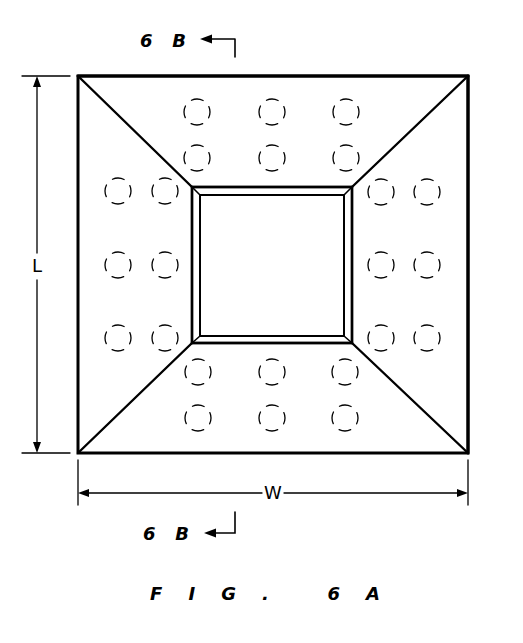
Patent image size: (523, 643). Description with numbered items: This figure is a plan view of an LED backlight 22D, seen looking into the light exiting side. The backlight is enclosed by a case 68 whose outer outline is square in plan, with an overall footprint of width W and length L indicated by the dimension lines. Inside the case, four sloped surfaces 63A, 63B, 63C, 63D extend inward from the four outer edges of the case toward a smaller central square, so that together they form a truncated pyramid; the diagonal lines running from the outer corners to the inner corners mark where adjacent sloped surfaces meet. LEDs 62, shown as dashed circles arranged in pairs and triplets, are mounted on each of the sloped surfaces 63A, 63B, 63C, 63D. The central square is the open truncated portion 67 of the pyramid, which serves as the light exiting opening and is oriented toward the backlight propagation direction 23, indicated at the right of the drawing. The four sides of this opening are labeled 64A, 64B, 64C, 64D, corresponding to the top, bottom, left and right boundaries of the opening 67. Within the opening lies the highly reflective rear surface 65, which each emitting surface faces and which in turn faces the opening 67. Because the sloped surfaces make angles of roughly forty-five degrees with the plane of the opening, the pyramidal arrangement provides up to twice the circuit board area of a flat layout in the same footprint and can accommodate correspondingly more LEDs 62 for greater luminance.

The LED backlight 22D is at (374, 56).
The backlight propagation direction 23 is at (495, 264).
The LEDs 62 is at (211, 118).
The sloped surface 63A is at (415, 110).
The sloped surface 63B is at (170, 441).
The sloped surface 63C is at (130, 160).
The sloped surface 63D is at (458, 388).
The top inner edge 64A is at (272, 196).
The bottom inner edge 64B is at (270, 336).
The left inner edge 64C is at (201, 264).
The right inner edge 64D is at (343, 264).
The highly reflective rear surface 65 is at (330, 313).
The open truncated portion 67 is at (238, 240).
The case 68 is at (308, 76).